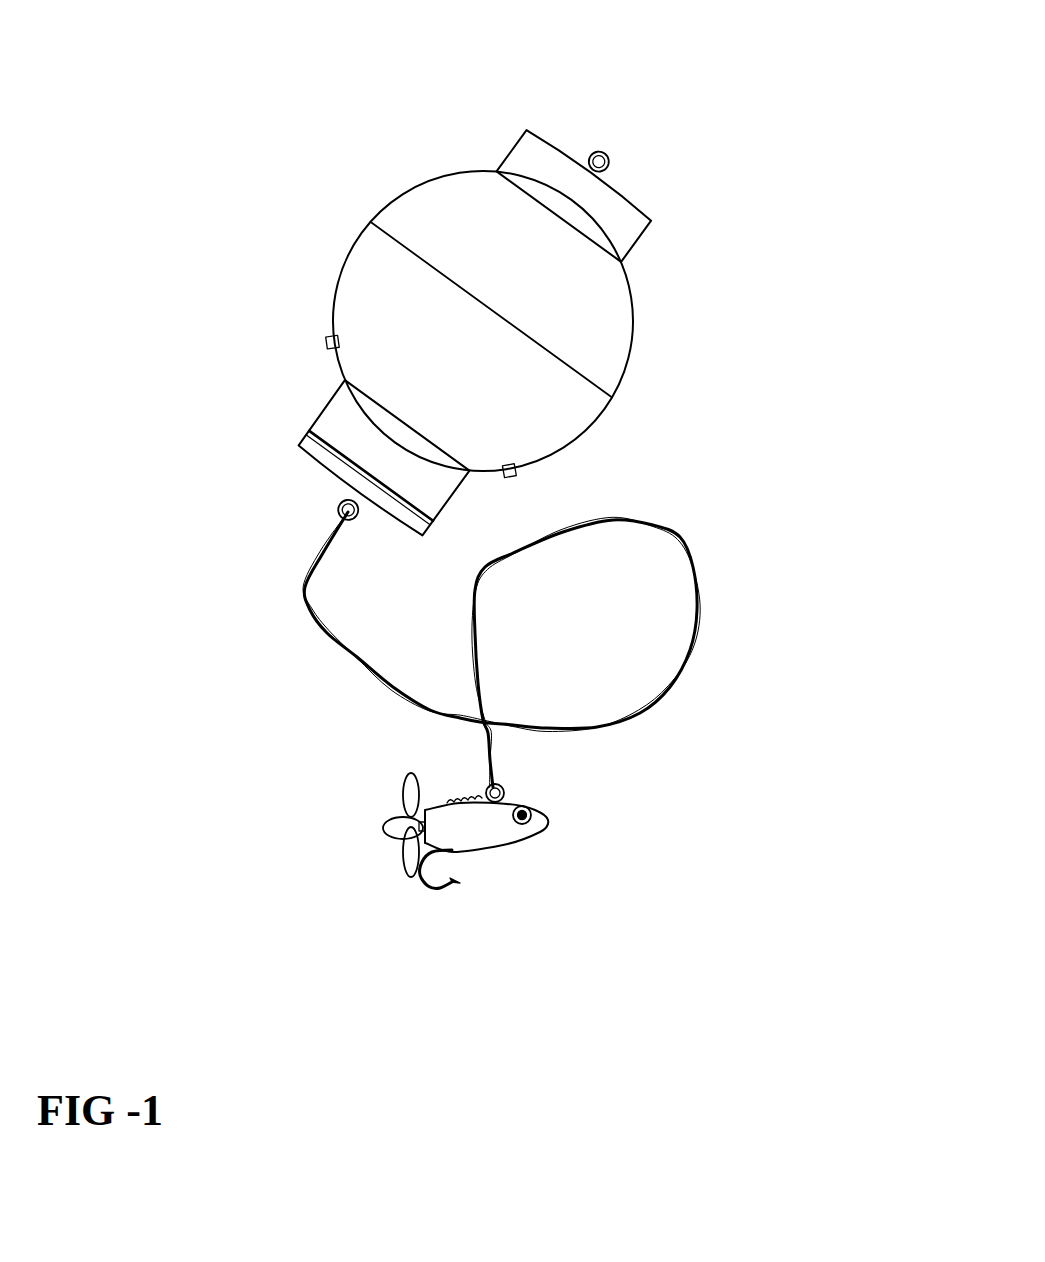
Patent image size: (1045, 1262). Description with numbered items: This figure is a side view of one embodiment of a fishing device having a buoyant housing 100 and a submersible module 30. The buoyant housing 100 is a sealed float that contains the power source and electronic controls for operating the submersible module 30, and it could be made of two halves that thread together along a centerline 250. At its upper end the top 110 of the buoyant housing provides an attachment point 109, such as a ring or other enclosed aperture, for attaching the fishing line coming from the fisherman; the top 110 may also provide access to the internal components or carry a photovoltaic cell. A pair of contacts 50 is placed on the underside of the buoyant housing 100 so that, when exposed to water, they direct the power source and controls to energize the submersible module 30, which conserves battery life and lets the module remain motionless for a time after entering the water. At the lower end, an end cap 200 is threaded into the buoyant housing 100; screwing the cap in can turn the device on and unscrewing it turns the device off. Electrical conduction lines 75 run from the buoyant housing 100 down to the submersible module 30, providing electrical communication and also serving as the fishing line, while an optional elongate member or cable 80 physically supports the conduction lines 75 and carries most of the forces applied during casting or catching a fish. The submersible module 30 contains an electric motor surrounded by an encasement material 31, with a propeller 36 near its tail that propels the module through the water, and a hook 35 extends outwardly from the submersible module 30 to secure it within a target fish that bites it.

The buoyant housing 100 is at (372, 254).
The centerline 250 is at (618, 397).
The top 110 is at (630, 188).
The attachment point 109 is at (609, 152).
The contacts 50 is at (522, 477).
The end cap 200 is at (308, 457).
The elongate member or cable 80 is at (340, 518).
The electrical conduction lines 75 is at (352, 542).
The submersible module 30 is at (464, 840).
The encasement material 31 is at (480, 835).
The propeller 36 is at (400, 810).
The hook 35 is at (457, 885).